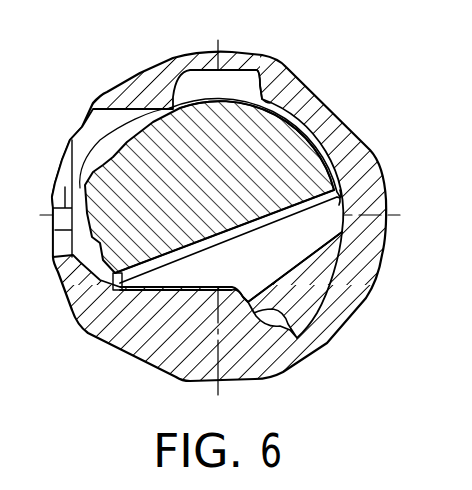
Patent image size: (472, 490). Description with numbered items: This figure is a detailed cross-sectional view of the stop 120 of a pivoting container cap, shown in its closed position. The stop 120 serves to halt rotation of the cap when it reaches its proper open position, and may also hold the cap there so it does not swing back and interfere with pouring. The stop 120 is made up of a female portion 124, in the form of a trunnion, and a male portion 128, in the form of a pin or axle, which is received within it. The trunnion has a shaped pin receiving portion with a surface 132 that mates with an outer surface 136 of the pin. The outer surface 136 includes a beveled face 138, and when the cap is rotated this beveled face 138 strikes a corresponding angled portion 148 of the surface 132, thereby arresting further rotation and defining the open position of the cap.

The stop 120 is at (89, 333).
The female portion 124 is at (294, 112).
The male portion 128 is at (340, 324).
The surface 132 is at (310, 281).
The outer surface 136 is at (270, 237).
The beveled face 138 is at (345, 163).
The angled portion 148 is at (284, 320).